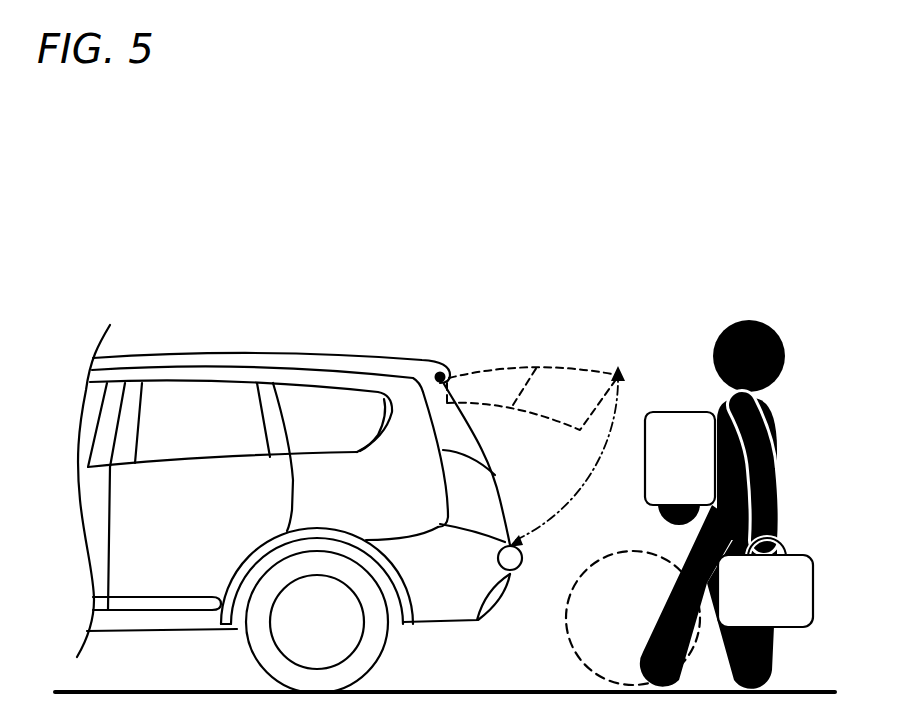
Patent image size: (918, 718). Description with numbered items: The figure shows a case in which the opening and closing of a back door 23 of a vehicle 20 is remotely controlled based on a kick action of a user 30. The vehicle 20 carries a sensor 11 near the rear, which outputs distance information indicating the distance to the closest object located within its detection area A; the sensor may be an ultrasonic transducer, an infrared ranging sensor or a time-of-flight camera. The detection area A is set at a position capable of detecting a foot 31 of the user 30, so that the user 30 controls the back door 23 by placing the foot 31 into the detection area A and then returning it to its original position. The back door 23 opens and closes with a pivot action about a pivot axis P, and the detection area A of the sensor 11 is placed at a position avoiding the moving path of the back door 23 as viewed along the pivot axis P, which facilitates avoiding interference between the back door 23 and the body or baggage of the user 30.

The sensor 11 is at (522, 558).
The vehicle 20 is at (309, 320).
The back door 23 is at (556, 364).
The user 30 is at (710, 474).
The foot 31 is at (652, 608).
The detection area A is at (567, 608).
The pivot axis P is at (440, 372).